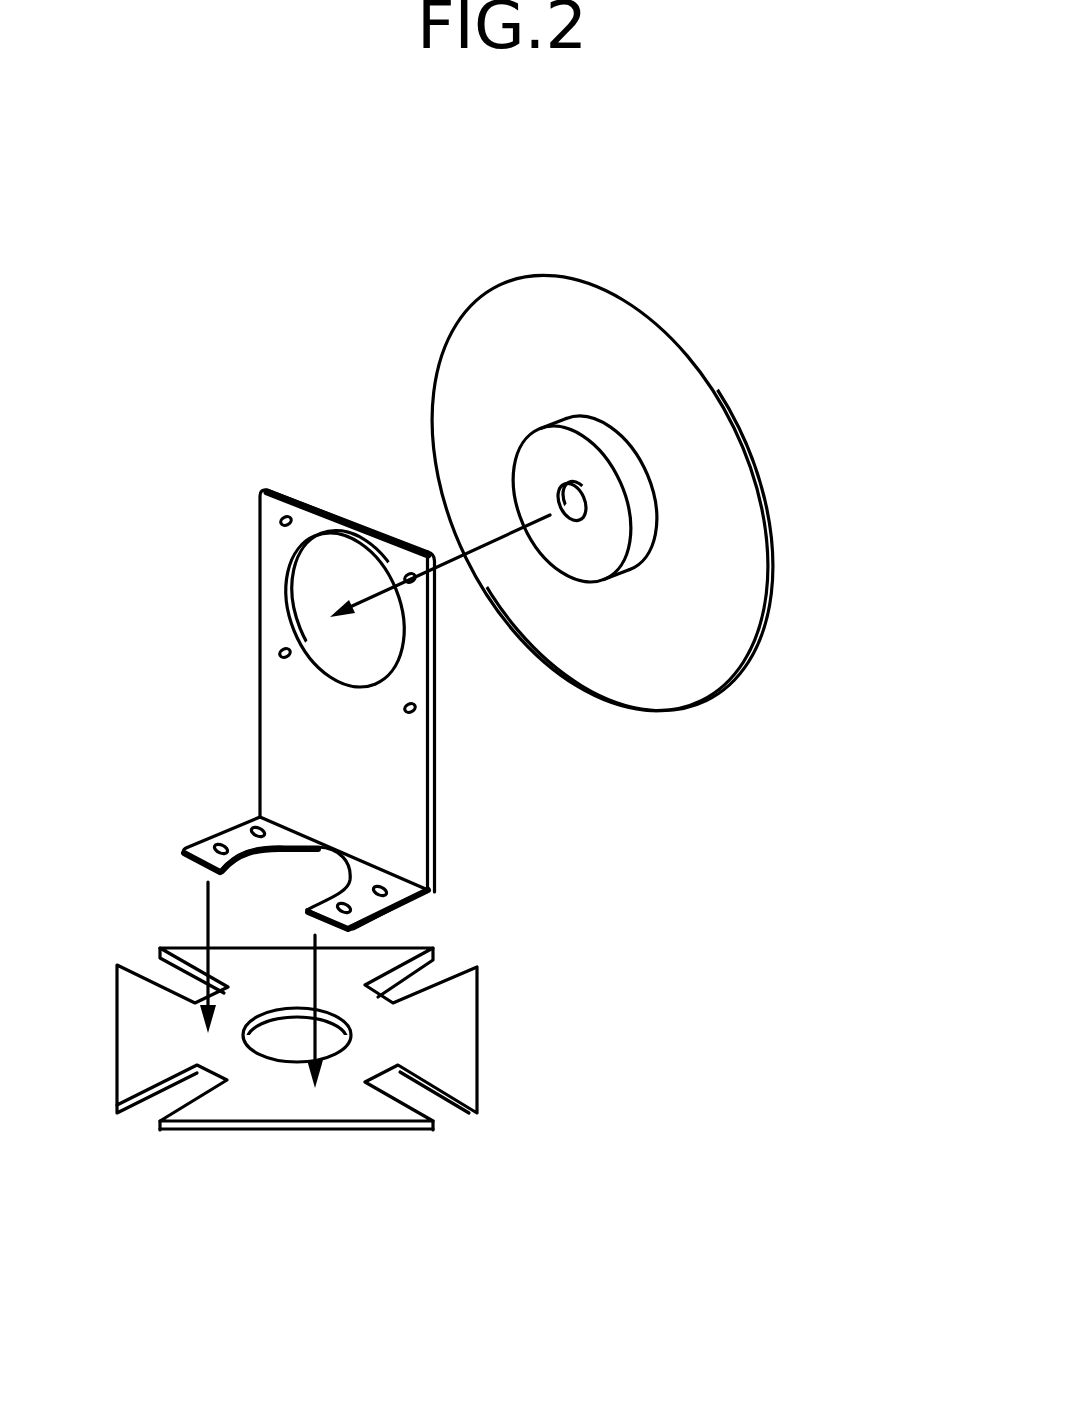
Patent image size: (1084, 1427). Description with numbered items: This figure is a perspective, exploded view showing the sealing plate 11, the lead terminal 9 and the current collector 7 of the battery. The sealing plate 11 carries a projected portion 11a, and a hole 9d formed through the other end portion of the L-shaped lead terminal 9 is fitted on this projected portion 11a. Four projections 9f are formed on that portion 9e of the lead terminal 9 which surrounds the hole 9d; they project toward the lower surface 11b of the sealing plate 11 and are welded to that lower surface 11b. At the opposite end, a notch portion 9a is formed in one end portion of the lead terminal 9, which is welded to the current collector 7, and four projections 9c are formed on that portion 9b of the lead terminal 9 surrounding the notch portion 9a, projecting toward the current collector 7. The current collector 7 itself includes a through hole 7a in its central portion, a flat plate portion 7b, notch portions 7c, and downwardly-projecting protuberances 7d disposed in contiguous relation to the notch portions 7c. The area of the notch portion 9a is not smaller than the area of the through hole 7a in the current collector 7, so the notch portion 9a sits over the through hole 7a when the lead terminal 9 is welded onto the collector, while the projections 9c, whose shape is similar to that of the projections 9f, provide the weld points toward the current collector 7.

The current collector 7 is at (457, 999).
The through hole 7a is at (283, 1037).
The flat plate portion 7b is at (367, 1043).
The notch portions 7c is at (433, 1107).
The downwardly-projecting protuberances 7d is at (460, 1113).
The lead terminal 9 is at (418, 763).
The notch portion 9a is at (304, 868).
The portion surrounding the notch portion 9b is at (282, 828).
The projections 9c is at (254, 829).
The hole 9d is at (332, 582).
The portion surrounding the hole 9e is at (280, 618).
The projections 9f is at (407, 572).
The sealing plate 11 is at (596, 307).
The projected portion 11a is at (606, 497).
The lower surface 11b is at (653, 597).